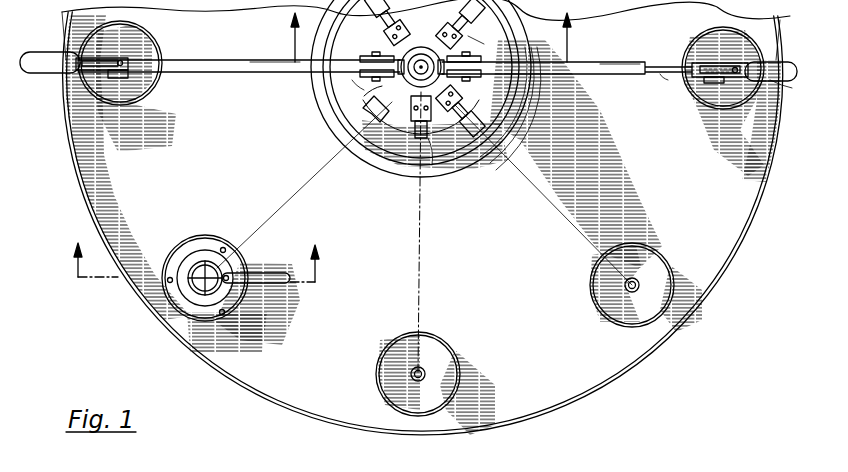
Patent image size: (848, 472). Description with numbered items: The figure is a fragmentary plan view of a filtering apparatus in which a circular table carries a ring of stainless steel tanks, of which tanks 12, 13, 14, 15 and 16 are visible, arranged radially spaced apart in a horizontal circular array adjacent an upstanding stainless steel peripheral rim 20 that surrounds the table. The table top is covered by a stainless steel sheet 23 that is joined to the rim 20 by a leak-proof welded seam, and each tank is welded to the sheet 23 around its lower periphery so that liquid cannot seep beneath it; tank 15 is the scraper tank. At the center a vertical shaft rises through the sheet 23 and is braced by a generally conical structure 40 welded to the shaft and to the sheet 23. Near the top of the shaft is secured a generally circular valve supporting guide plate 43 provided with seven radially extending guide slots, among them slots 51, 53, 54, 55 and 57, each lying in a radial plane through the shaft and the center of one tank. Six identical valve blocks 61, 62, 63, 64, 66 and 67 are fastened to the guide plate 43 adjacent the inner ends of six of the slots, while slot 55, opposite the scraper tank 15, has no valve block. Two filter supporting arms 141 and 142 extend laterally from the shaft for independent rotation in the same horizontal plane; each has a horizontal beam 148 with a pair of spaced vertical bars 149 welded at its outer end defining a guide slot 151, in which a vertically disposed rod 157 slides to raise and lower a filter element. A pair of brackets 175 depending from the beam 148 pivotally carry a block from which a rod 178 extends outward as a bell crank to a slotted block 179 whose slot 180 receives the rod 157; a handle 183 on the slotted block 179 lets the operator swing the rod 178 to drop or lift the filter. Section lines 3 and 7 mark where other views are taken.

The tank 12 is at (706, 42).
The tank 13 is at (600, 312).
The tank 14 is at (384, 352).
The scraper tank 15 is at (207, 242).
The tank 16 is at (92, 126).
The peripheral rim 20 is at (195, 356).
The stainless steel sheet 23 is at (476, 278).
The conical structure 40 is at (345, 132).
The guide plate 43 is at (372, 148).
The guide slot 51 is at (478, 12).
The guide slot 53 is at (500, 108).
The guide slot 54 is at (416, 130).
The guide slot 55 is at (368, 112).
The guide slot 57 is at (368, 26).
The valve block 61 is at (452, 34).
The valve block 62 is at (476, 36).
The valve block 63 is at (436, 160).
The valve block 64 is at (412, 140).
The valve block 66 is at (356, 84).
The valve block 67 is at (393, 30).
The filter supporting arm 141 is at (218, 62).
The filter supporting arm 142 is at (580, 60).
The horizontal beam 148 is at (245, 62).
The vertical bars 149 is at (122, 60).
The guide slot 151 is at (780, 84).
The vertically disposed rod 157 is at (124, 62).
The brackets 175 is at (360, 58).
The rod 178 is at (664, 78).
The slotted block 179 is at (66, 17).
The slot 180 is at (92, 74).
The handle 183 is at (50, 43).
The section line 3- 3 is at (430, 34).
The section line 7- 7 is at (193, 276).